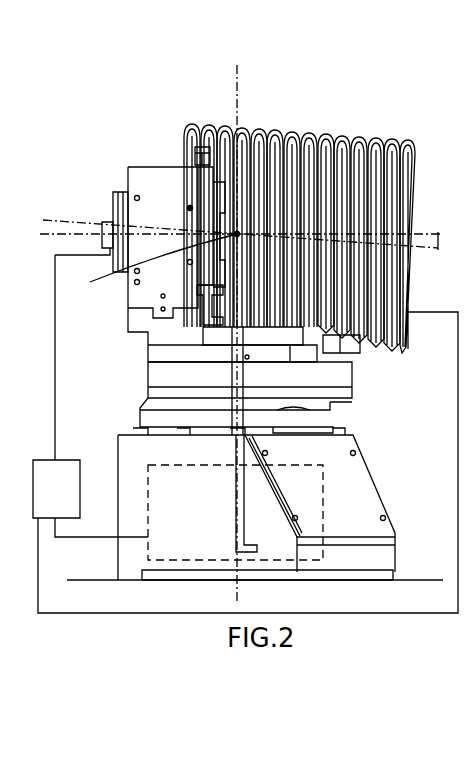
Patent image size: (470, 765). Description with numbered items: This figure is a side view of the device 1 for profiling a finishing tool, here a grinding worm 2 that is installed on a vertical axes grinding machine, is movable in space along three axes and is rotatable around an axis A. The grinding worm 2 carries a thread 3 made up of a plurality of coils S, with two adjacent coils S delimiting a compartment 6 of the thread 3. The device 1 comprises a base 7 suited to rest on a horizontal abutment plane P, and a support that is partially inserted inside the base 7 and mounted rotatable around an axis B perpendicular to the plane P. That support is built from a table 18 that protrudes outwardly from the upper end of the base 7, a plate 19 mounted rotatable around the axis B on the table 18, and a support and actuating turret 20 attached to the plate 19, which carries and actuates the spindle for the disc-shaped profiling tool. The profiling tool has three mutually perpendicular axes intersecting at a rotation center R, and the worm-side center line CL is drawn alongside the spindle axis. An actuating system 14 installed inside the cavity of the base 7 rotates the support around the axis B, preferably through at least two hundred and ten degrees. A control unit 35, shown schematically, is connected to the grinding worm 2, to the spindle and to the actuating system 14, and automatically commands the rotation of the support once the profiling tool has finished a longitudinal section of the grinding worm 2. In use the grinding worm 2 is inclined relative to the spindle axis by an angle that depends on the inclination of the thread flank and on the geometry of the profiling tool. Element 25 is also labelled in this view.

The device for profiling a finishing tool 1 is at (143, 146).
The grinding worm 2 is at (333, 125).
The thread 3 is at (193, 128).
The compartment 6 is at (371, 138).
The base 7 is at (381, 466).
The actuating system 14 is at (313, 500).
The table 18 is at (346, 364).
The plate 19 is at (128, 332).
The support and actuating turret 20 is at (133, 176).
The pin 25 is at (117, 200).
The control unit 35 is at (40, 462).
The axis B is at (240, 68).
The coils S is at (261, 124).
The rotation center R is at (155, 264).
The axis A is at (410, 254).
The horizontal abutment plane P is at (407, 580).
The center line CL is at (412, 234).